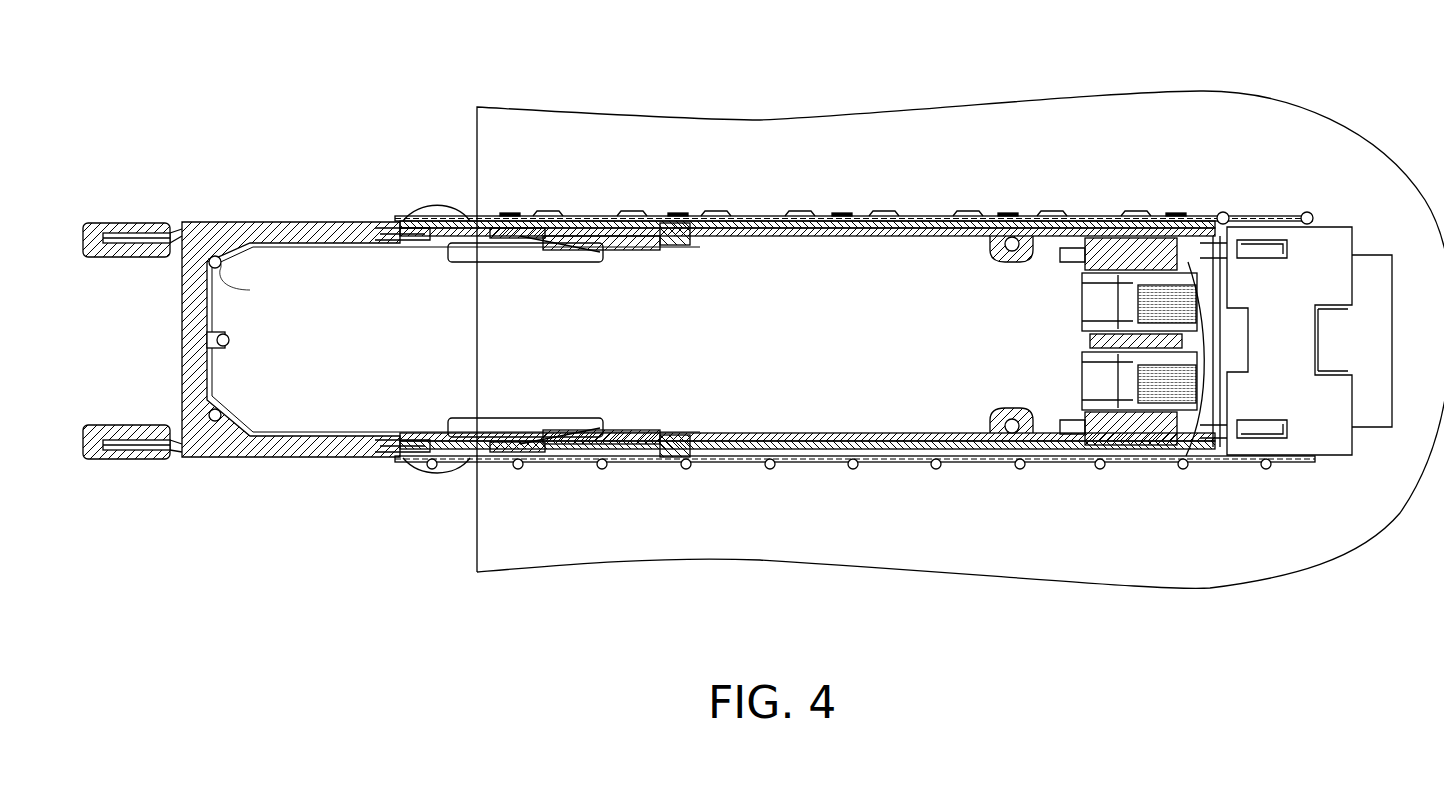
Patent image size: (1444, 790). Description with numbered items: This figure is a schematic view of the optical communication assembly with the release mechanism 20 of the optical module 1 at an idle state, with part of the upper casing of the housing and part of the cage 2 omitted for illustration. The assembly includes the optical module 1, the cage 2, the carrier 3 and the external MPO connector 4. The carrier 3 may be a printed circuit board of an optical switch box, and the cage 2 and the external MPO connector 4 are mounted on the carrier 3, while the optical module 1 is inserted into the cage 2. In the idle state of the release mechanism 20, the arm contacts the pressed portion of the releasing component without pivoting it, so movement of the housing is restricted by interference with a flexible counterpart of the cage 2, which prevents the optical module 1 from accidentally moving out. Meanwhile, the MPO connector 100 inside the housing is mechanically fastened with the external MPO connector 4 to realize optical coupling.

The optical module 1 is at (182, 340).
The cage 2 is at (952, 212).
The carrier 3 is at (797, 127).
The external MPO connector 4 is at (1338, 256).
The release mechanism 20 is at (553, 455).
The MPO connector 100 is at (1188, 268).